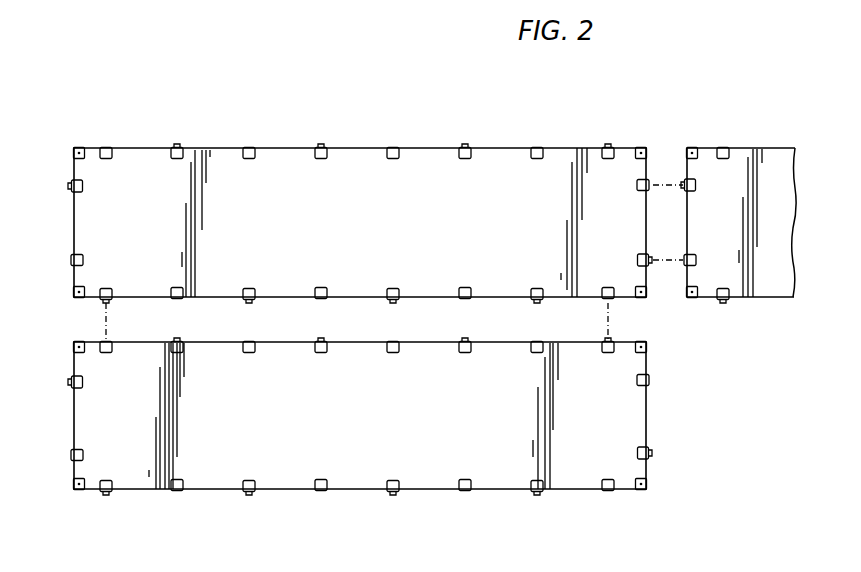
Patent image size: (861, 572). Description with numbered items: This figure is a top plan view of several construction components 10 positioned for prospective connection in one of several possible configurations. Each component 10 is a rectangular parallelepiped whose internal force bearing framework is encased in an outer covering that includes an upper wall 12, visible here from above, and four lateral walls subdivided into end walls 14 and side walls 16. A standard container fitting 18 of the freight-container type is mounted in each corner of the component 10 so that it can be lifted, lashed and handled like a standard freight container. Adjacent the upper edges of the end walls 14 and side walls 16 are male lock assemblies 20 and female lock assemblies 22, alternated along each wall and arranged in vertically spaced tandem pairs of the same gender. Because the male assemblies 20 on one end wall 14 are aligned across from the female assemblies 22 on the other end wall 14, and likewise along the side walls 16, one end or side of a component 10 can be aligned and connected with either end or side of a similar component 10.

The construction component 10 is at (410, 105).
The upper wall 12 is at (341, 225).
The end wall 14 is at (72, 172).
The side wall 16 is at (280, 148).
The standard container fitting 18 is at (76, 148).
The upper male lock assembly 20 is at (176, 144).
The upper female lock assembly 22 is at (243, 147).